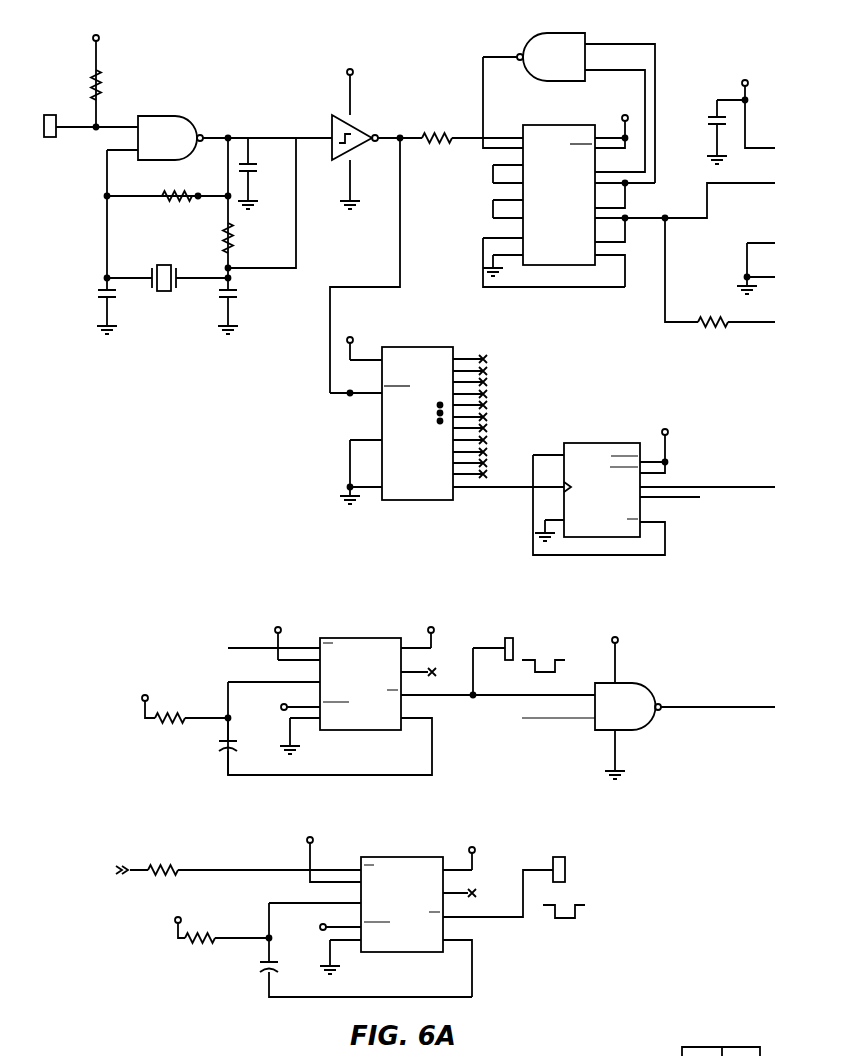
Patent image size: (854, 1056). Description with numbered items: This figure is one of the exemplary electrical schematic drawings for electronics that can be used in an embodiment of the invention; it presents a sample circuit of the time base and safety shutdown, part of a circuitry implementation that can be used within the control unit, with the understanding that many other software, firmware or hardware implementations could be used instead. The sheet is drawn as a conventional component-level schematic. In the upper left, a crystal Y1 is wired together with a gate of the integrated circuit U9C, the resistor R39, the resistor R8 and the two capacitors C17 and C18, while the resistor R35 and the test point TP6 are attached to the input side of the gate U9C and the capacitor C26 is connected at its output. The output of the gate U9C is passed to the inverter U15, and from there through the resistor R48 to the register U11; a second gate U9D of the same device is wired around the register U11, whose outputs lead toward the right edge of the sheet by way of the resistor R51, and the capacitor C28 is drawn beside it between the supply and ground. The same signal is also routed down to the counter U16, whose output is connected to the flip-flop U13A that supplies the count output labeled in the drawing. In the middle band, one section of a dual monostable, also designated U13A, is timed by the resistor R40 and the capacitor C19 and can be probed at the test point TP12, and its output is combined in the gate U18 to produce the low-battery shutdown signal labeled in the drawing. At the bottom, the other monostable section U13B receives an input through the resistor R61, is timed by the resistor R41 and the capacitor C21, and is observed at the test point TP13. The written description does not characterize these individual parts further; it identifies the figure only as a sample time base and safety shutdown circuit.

The pull-up resistor 10K R35 is at (105, 72).
The test point 6 TP6 is at (89, 116).
The NAND gate 74AC00 U9C is at (219, 182).
The feedback resistor 10M R39 is at (168, 198).
The capacitor 27pF C26 is at (267, 173).
The oscillator resistor 330K R8 is at (249, 208).
The crystal 32.000KHz Y1 is at (168, 277).
The capacitor 22pF C17 is at (88, 306).
The capacitor 22pF C18 is at (247, 306).
The Schmitt inverter NC7S14/SC-70 U15 is at (385, 222).
The resistor 10K R48 is at (472, 136).
The NAND gate 74AC00 U9D is at (561, 96).
The hex D flip-flop 74HC174 U11 is at (629, 189).
The resistor 1.5K R51 is at (720, 281).
The decoupling capacitor 1uF C28 is at (725, 178).
The binary counter 74HC4020 U16 is at (447, 406).
The D flip-flop 74HC74 U13A is at (654, 482).
The timing resistor 21.5K 1% R40 is at (180, 711).
The timing capacitor 22uF 10V C19 is at (248, 746).
The test point 12 TP12 is at (519, 656).
The NAND gate NC7800/SC-70 U18 is at (679, 699).
The resistor 10K R61 is at (199, 868).
The timing resistor 38.3K 1% R41 is at (217, 931).
The timing capacitor 22uF 10V C21 is at (360, 941).
The monostable multivibrator 74HC123 (B) U13B is at (411, 908).
The test point 13 TP13 is at (562, 877).